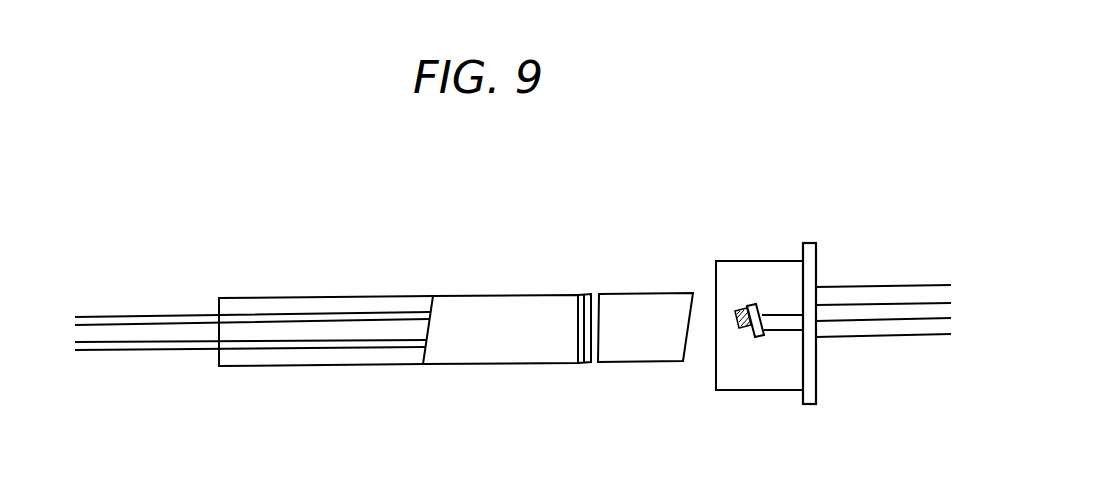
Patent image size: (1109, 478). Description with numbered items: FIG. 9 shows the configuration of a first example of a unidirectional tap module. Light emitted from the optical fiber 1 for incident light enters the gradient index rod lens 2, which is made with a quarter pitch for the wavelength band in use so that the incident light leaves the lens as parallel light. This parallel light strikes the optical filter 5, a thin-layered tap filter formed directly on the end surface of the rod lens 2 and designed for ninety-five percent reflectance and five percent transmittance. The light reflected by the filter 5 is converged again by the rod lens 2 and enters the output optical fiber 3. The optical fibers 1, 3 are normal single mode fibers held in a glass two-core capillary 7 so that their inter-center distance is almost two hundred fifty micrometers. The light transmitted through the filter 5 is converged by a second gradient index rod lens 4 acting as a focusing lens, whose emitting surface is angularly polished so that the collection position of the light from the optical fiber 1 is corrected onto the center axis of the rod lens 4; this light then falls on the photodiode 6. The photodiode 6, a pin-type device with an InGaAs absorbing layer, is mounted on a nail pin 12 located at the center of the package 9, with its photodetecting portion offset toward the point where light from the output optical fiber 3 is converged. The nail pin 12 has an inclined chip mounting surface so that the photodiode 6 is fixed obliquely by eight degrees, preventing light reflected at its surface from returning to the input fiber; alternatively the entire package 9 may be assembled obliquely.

The optical fiber for incident light 1 is at (143, 316).
The output optical fiber 3 is at (147, 353).
The two-core capillary 7 is at (320, 297).
The gradient index rod lens 2 is at (498, 295).
The optical filter 5 is at (585, 294).
The second gradient index rod lens 4 is at (641, 293).
The package 9 is at (757, 262).
The photodiode 6 is at (743, 330).
The nail pin 12 is at (777, 325).